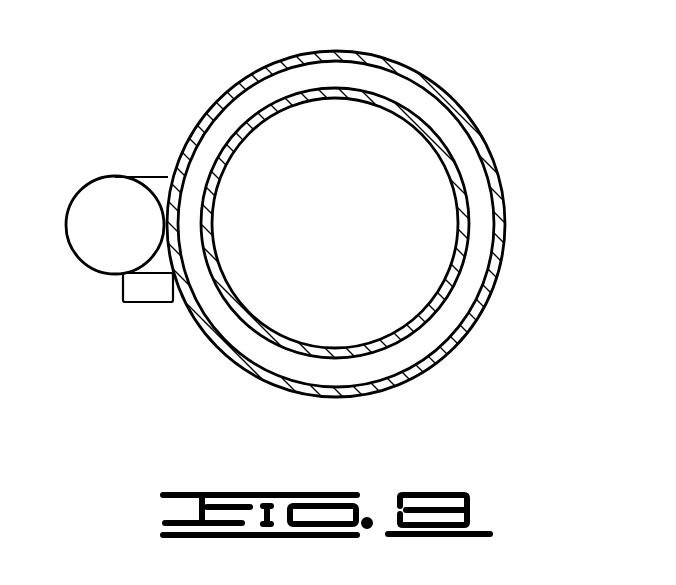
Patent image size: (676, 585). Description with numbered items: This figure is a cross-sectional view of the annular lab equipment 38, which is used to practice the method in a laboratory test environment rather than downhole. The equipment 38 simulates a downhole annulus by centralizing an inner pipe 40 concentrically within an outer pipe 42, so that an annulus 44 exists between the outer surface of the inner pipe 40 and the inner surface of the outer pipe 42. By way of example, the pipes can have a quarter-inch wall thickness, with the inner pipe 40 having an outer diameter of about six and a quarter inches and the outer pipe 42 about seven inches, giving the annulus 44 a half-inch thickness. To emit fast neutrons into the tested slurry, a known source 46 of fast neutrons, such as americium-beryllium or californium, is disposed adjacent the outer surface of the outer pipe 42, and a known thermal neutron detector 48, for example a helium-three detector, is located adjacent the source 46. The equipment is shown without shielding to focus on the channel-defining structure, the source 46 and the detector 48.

The annular lab equipment 38 is at (376, 215).
The inner pipe 40 is at (432, 175).
The outer pipe 42 is at (502, 202).
The annulus 44 is at (480, 252).
The source of fast neutrons 46 is at (150, 293).
The thermal neutron detector 48 is at (90, 253).